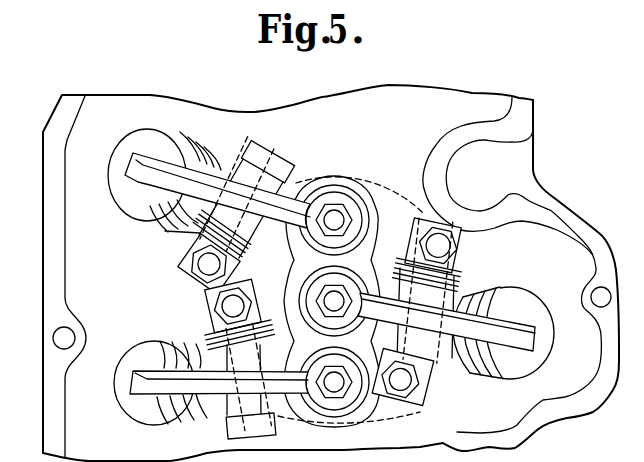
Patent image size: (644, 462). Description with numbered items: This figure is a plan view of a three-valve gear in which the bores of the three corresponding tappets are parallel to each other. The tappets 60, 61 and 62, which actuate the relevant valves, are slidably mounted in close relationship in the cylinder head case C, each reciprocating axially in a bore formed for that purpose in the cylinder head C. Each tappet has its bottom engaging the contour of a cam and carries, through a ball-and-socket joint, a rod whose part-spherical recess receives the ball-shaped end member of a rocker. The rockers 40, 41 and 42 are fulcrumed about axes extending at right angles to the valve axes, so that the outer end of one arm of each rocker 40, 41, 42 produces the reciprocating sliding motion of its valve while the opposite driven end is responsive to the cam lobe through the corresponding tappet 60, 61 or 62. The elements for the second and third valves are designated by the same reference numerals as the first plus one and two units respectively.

The cylinder head C is at (55, 247).
The rocker 40 is at (449, 362).
The rocker 41 is at (178, 226).
The rocker 42 is at (217, 414).
The tappet 60 is at (313, 286).
The tappet 61 is at (356, 196).
The tappet 62 is at (362, 402).